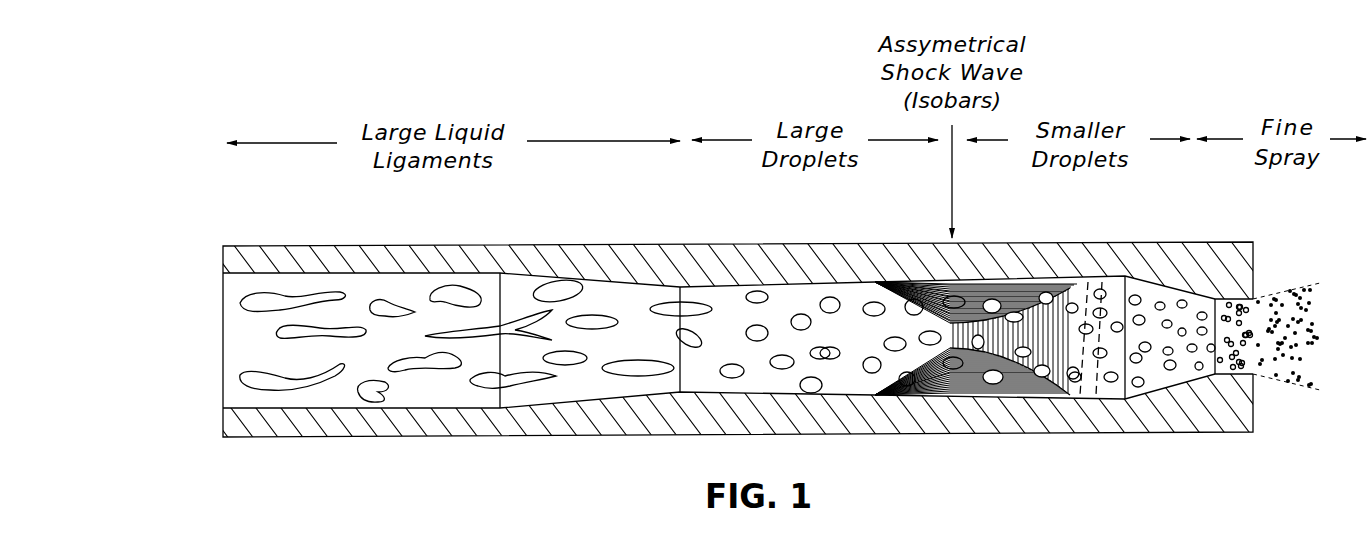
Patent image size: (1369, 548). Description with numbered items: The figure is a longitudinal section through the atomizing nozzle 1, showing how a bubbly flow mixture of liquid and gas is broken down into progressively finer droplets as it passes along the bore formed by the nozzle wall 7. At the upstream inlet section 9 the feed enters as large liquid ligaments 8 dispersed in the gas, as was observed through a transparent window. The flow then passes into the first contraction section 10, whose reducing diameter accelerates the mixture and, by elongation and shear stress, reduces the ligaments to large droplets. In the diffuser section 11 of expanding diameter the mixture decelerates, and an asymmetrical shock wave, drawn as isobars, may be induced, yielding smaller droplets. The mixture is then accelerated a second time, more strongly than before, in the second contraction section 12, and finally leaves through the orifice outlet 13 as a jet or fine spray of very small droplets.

The nozzle 1 is at (1010, 458).
The nozzle wall 7 is at (566, 420).
The liquid ligament 8 is at (252, 350).
The inlet section with large liquid ligaments 9 is at (500, 229).
The converging section 10 is at (500, 241).
The throat section with large droplets and shock wave 11 is at (680, 226).
The downstream section with smaller droplets 12 is at (1125, 237).
The exit orifice producing fine spray 13 is at (1230, 298).